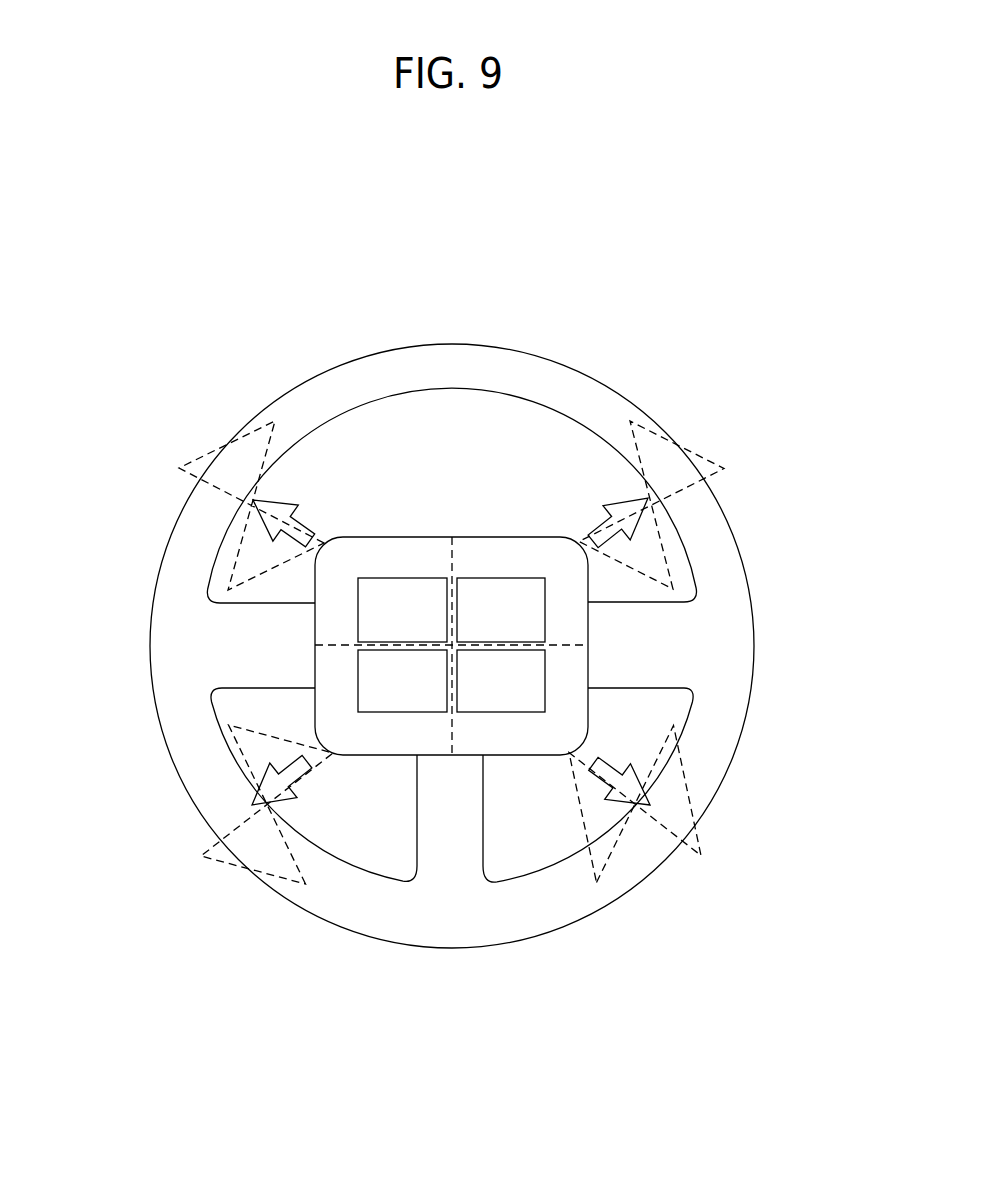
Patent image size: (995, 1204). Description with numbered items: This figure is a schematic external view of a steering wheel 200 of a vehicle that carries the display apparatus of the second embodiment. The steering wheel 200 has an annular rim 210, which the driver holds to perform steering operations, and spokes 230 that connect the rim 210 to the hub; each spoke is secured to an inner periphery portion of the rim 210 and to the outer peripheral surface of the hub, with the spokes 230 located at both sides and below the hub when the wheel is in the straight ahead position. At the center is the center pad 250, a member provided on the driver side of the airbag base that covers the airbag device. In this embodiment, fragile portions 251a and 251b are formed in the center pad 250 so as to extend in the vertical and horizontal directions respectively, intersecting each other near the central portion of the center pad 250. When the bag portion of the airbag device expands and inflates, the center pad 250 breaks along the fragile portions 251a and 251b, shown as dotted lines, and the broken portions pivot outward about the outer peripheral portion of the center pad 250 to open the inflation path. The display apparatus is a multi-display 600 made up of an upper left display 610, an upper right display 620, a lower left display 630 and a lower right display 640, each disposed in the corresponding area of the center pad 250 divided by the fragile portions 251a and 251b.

The steering wheel 200 is at (655, 250).
The rim 210 is at (538, 370).
The spokes 230 is at (262, 665).
The center pad 250 is at (535, 552).
The fragile portion 251a is at (452, 567).
The fragile portion 251b is at (565, 645).
The multi-display 600 is at (473, 714).
The upper left display 610 is at (397, 595).
The upper right display 620 is at (528, 603).
The lower left display 630 is at (362, 665).
The lower right display 640 is at (533, 677).